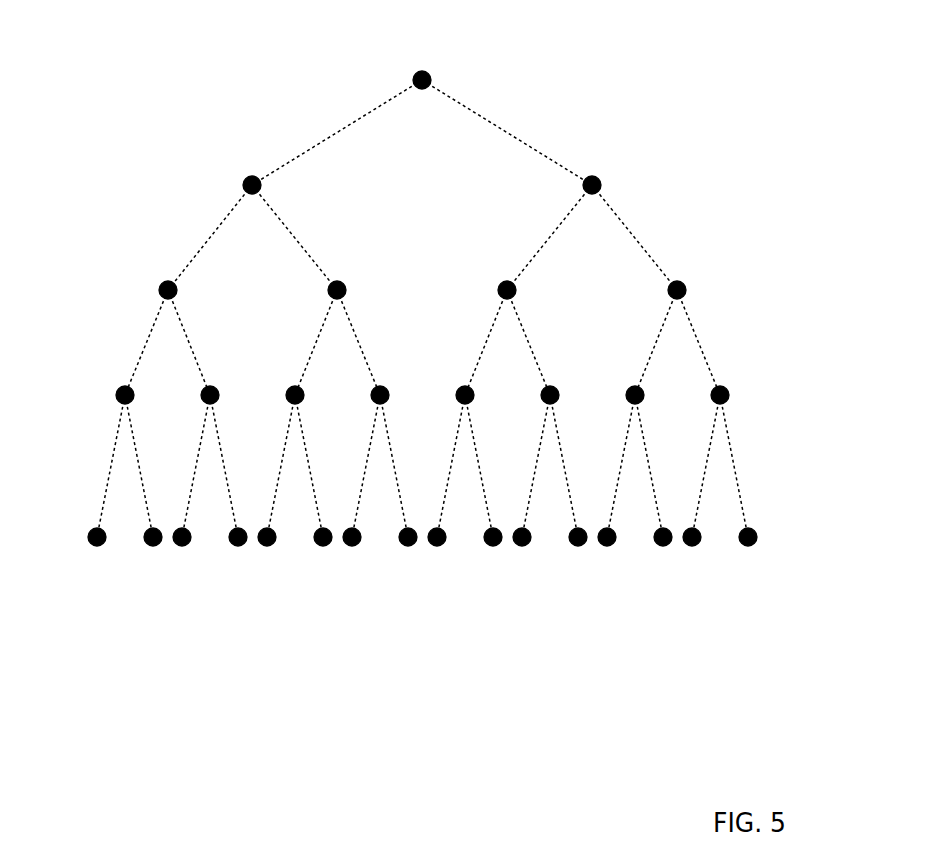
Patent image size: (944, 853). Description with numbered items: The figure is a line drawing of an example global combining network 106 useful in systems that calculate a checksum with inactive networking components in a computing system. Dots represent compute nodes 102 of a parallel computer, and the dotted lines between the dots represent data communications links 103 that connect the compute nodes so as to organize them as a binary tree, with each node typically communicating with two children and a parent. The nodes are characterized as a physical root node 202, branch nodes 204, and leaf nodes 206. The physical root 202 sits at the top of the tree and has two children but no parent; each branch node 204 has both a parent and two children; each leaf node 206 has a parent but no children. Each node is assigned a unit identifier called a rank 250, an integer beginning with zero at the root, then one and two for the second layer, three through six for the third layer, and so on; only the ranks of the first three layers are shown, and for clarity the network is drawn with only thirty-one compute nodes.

The compute nodes 102 is at (478, 387).
The data communications links 103 is at (345, 127).
The global combining network 106 is at (278, 760).
The physical root node 202 is at (546, 55).
The branch nodes 204 is at (768, 137).
The leaf nodes 206 is at (493, 546).
The rank 250 is at (558, 193).